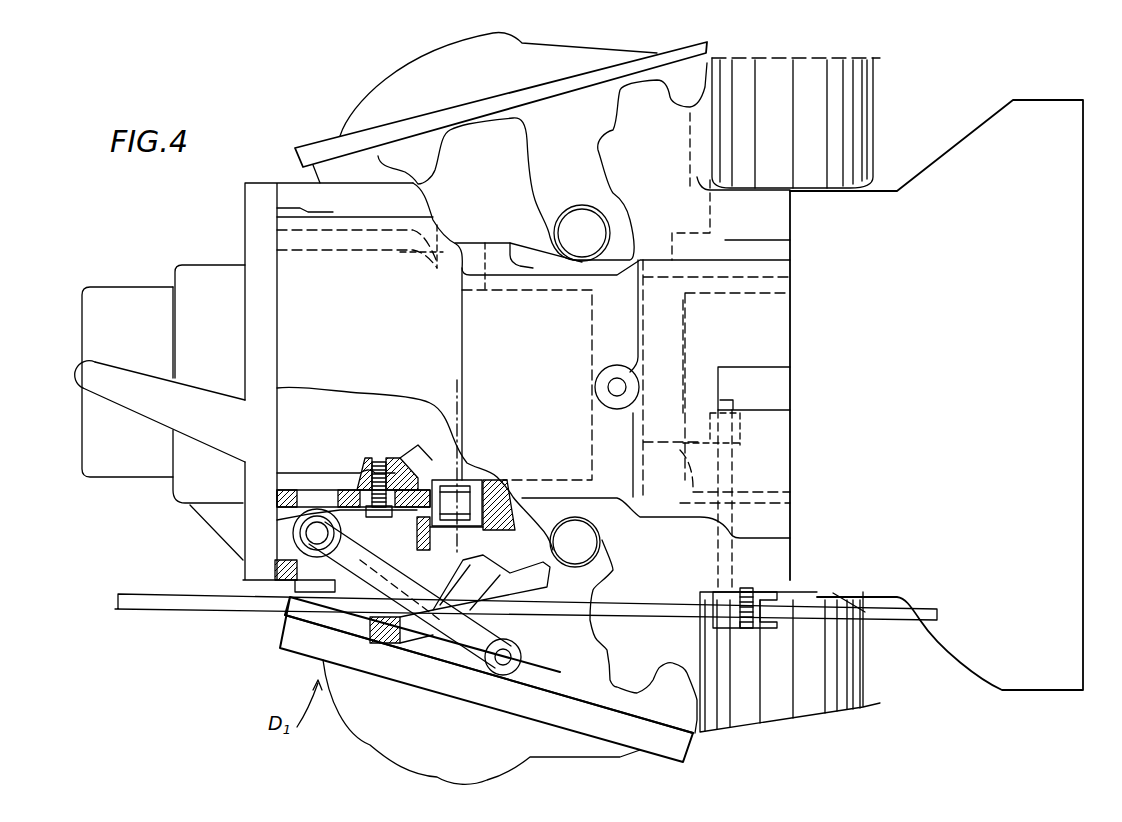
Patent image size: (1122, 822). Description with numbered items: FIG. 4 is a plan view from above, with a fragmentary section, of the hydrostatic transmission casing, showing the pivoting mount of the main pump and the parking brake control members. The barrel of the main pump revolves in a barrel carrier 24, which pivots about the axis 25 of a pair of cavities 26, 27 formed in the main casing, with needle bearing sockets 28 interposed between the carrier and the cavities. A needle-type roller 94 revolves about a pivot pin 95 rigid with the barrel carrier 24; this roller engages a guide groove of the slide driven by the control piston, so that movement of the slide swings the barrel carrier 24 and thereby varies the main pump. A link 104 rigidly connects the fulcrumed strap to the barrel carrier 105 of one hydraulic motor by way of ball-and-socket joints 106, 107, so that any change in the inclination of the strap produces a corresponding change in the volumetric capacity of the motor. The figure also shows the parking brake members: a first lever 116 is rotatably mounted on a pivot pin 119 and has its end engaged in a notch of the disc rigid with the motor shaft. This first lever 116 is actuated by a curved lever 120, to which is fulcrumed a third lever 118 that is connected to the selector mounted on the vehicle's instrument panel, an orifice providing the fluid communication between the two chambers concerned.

The barrel carrier 24 is at (403, 460).
The axis 25 is at (468, 478).
The cavity 26 is at (472, 482).
The cavity 27 is at (490, 258).
The needle bearing socket 28 is at (495, 487).
The roller 94 is at (355, 490).
The pivot pin 95 is at (362, 456).
The link 104 is at (282, 643).
The barrel carrier 105 is at (442, 695).
The ball-and-socket joint 106 is at (313, 533).
The ball-and-socket joint 107 is at (498, 665).
The first lever 116 is at (695, 425).
The third lever 118 is at (180, 605).
The pivot pin 119 is at (727, 465).
The curved lever 120 is at (805, 610).